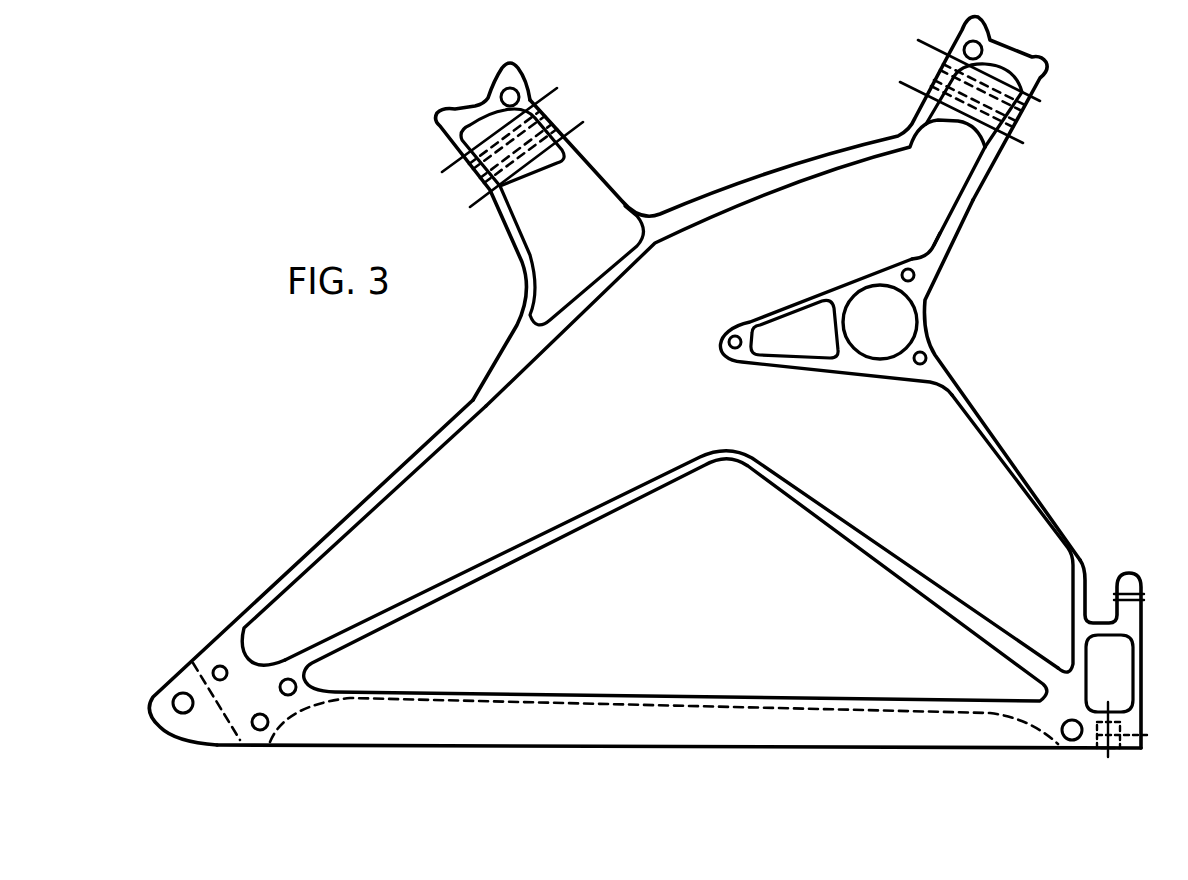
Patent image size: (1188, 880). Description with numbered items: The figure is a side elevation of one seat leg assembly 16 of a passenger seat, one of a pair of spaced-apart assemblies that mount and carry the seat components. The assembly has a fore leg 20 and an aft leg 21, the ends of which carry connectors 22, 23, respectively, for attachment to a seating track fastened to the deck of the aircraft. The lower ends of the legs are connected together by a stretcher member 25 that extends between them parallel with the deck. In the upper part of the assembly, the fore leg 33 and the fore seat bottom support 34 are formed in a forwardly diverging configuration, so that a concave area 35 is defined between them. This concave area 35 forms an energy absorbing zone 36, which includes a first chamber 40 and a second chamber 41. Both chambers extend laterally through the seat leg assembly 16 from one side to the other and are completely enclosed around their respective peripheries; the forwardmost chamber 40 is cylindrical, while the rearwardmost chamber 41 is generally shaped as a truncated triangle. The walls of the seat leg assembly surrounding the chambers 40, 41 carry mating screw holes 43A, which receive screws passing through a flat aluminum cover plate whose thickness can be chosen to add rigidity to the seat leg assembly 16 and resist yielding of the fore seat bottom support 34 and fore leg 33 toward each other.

The seat leg assembly 16 is at (498, 318).
The fore leg 20 is at (1075, 474).
The aft leg 21 is at (403, 483).
The connector 22 is at (260, 735).
The connector 23 is at (1078, 740).
The stretcher member 25 is at (580, 735).
The fore leg 33 is at (1032, 416).
The fore seat bottom support 34 is at (933, 212).
The concave area 35 is at (972, 274).
The energy absorbing zone 36 is at (936, 300).
The first chamber 40 is at (873, 307).
The second chamber 41 is at (795, 328).
The mating screw holes 43A is at (735, 340).